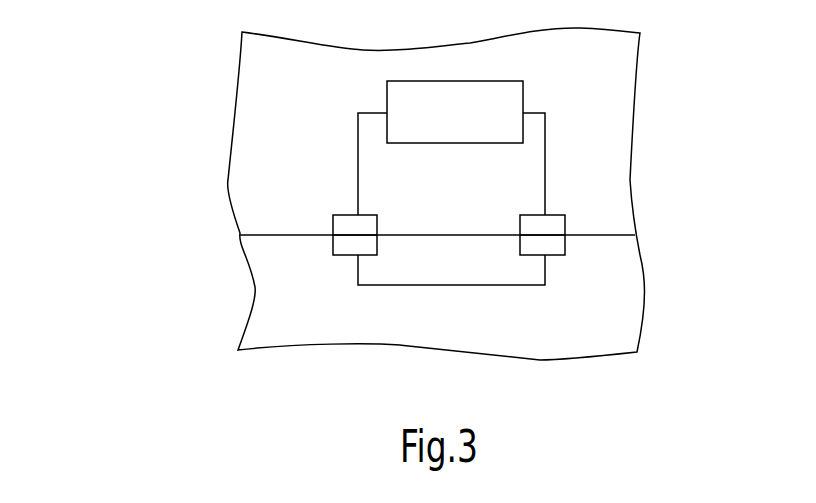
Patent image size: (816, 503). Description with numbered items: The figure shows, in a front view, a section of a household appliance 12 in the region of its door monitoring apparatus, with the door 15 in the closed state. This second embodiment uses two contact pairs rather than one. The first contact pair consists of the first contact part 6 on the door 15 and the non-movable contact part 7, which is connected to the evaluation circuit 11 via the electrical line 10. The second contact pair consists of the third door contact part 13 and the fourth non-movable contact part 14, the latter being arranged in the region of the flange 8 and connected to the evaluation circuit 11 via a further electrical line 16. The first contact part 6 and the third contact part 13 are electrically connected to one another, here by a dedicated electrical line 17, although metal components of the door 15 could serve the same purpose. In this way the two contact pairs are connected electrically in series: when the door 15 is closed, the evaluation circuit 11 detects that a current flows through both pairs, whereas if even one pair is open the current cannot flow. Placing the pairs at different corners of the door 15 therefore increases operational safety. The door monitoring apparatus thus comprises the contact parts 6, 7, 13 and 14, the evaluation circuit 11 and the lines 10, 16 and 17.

The first contact part 6 is at (565, 245).
The non-movable contact part 7 is at (565, 223).
The flange 8 is at (638, 202).
The electrical line 10 is at (545, 160).
The evaluation circuit 11 is at (528, 92).
The household appliance 12 is at (158, 75).
The third door contact part 13 is at (333, 238).
The fourth non-movable contact part 14 is at (332, 223).
The door 15 is at (648, 307).
The electrical line 16 is at (357, 163).
The dedicated electrical line 17 is at (510, 287).